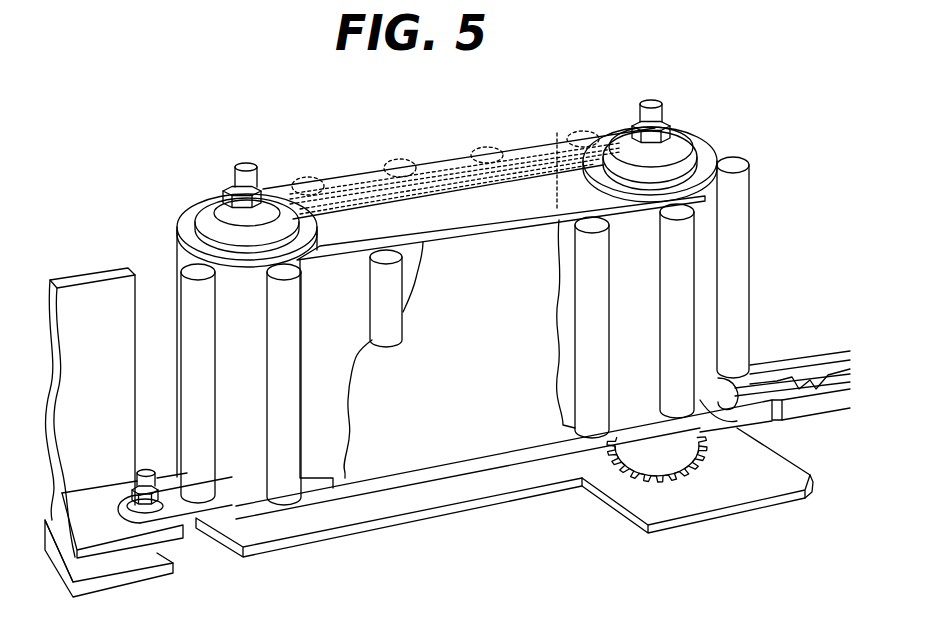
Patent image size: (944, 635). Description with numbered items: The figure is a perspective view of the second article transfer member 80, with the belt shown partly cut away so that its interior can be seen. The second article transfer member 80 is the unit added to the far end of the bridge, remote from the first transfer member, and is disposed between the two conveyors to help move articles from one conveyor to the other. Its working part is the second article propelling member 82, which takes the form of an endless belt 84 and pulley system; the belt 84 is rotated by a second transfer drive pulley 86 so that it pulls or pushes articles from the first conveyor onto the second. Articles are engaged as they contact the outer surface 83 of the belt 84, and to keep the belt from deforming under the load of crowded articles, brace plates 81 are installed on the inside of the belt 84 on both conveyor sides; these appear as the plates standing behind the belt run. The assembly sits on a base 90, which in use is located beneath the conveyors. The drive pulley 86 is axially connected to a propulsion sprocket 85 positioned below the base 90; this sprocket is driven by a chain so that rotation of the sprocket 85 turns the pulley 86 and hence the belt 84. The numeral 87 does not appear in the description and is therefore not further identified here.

The second article transfer member 80 is at (556, 122).
The brace plates 81 is at (420, 218).
The second article propelling member 82 is at (756, 240).
The outer surface 83 is at (712, 330).
The endless belt 84 is at (313, 440).
The propulsion sprocket 85 is at (653, 478).
The second transfer drive pulley 86 is at (699, 150).
The cam follower roller 87 is at (583, 403).
The base 90 is at (758, 461).